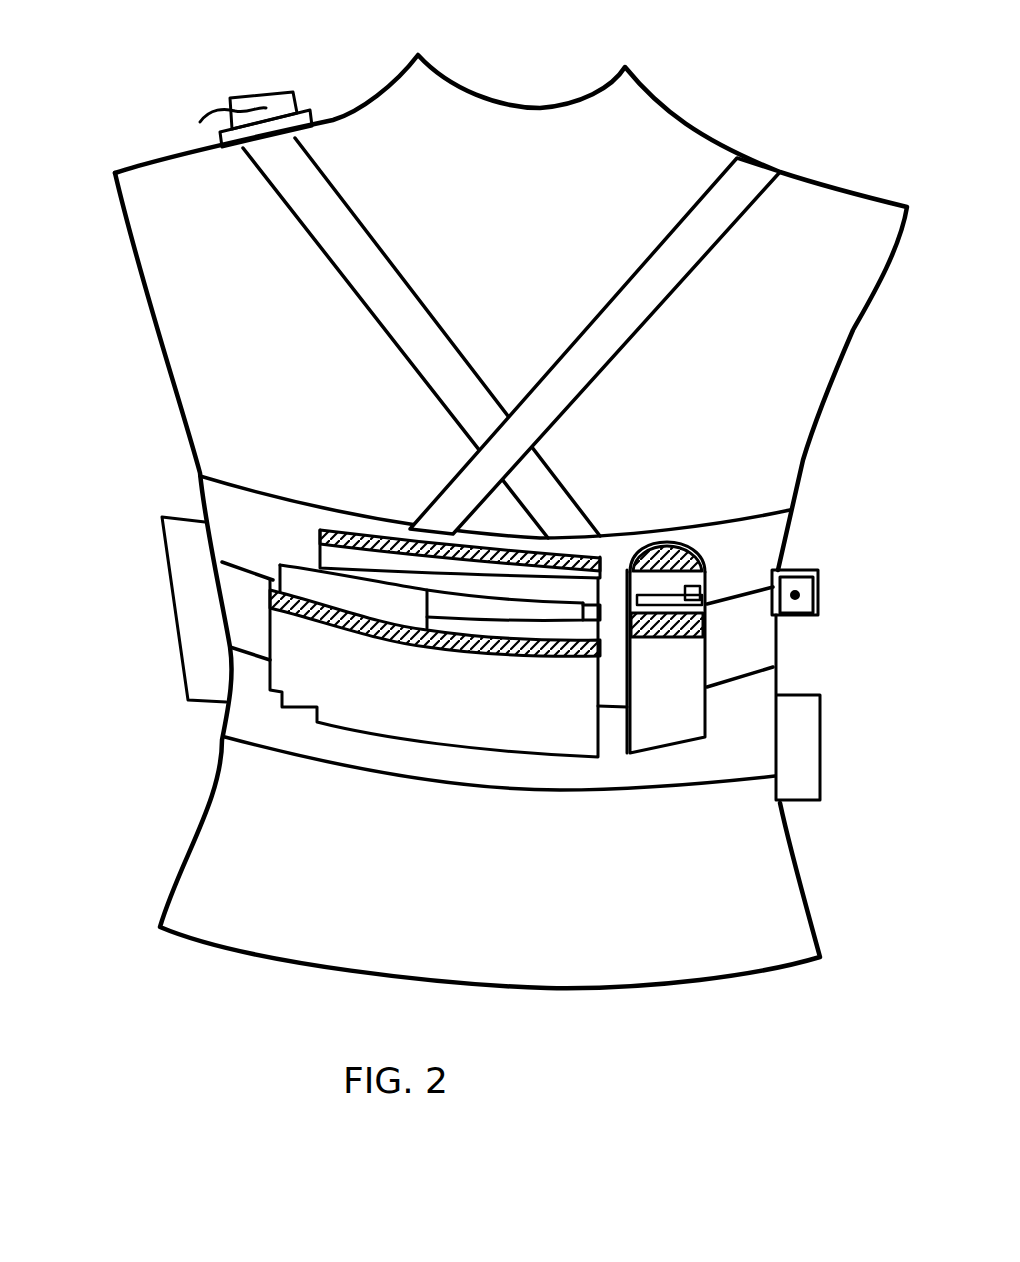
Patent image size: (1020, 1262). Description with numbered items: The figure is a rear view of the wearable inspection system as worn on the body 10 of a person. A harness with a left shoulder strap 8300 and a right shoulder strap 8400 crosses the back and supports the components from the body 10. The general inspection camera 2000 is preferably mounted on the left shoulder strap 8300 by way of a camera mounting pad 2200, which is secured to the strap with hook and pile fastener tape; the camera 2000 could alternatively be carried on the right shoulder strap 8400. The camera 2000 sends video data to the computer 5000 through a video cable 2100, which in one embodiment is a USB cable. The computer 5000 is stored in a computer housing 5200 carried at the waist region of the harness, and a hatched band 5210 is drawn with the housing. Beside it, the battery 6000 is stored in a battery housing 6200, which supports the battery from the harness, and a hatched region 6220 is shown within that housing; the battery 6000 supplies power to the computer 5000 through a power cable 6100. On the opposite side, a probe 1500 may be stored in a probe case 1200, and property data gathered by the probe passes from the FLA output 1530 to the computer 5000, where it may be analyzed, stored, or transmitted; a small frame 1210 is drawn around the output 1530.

The body 10 is at (807, 345).
The left shoulder strap 8300 is at (327, 213).
The right shoulder strap 8400 is at (650, 288).
The general inspection camera 2000 is at (252, 100).
The video cable 2100 is at (210, 113).
The camera mounting pad 2200 is at (200, 633).
The hatched support bands 5210 is at (333, 560).
The computer 5000 is at (500, 612).
The computer housing 5200 is at (413, 730).
The power cable 6100 is at (613, 580).
The battery housing 6200 is at (683, 740).
The battery 6000 is at (717, 572).
The pocket hatched band 6220 is at (670, 640).
The buckle frame 1210 is at (803, 565).
The FLA output 1530 is at (800, 595).
The probe 1500 is at (800, 615).
The probe case 1200 is at (813, 782).